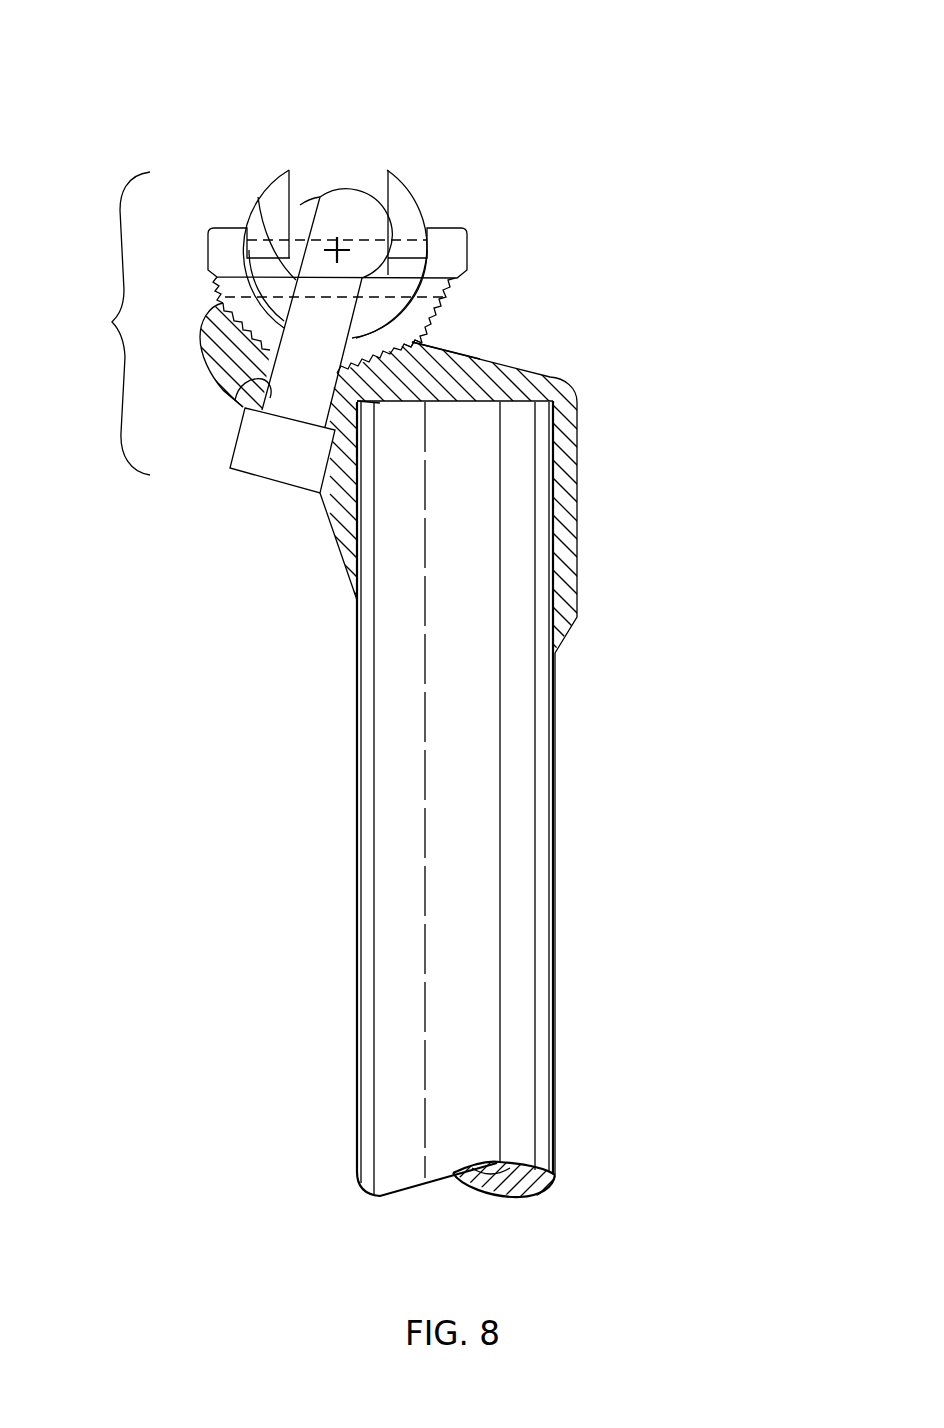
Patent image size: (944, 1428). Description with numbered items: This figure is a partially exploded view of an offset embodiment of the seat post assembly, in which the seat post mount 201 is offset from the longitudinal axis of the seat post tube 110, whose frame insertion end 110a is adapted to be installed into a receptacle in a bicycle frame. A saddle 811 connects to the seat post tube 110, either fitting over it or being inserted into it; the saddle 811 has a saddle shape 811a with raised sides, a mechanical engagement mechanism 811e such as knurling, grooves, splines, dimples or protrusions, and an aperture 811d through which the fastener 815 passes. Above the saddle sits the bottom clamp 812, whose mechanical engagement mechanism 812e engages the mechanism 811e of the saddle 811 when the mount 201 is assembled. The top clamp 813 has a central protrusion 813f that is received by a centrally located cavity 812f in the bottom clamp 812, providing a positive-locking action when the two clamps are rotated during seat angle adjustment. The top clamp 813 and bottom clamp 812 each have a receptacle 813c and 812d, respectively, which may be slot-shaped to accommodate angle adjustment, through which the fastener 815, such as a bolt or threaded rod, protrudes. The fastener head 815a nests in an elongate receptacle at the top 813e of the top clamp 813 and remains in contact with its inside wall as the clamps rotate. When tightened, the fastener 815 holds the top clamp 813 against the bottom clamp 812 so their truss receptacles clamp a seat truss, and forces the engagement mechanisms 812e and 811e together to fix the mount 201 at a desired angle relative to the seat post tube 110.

The seat post tube 110 is at (540, 712).
The frame insertion end 110a is at (556, 780).
The seat post mount 201 is at (111, 323).
The saddle 811 is at (553, 375).
The saddle shape 811a is at (442, 356).
The aperture 811d is at (235, 398).
The mechanical engagement mechanism 811e is at (422, 352).
The bottom clamp 812 is at (455, 233).
The receptacle 812d is at (230, 273).
The mechanical engagement mechanism 812e is at (430, 342).
The cavity 812f is at (423, 403).
The top clamp 813 is at (393, 178).
The receptacle 813c is at (258, 197).
The top 813e is at (373, 183).
The central protrusion 813f is at (380, 403).
The fastener 815 is at (338, 192).
The fastener head 815a is at (317, 200).